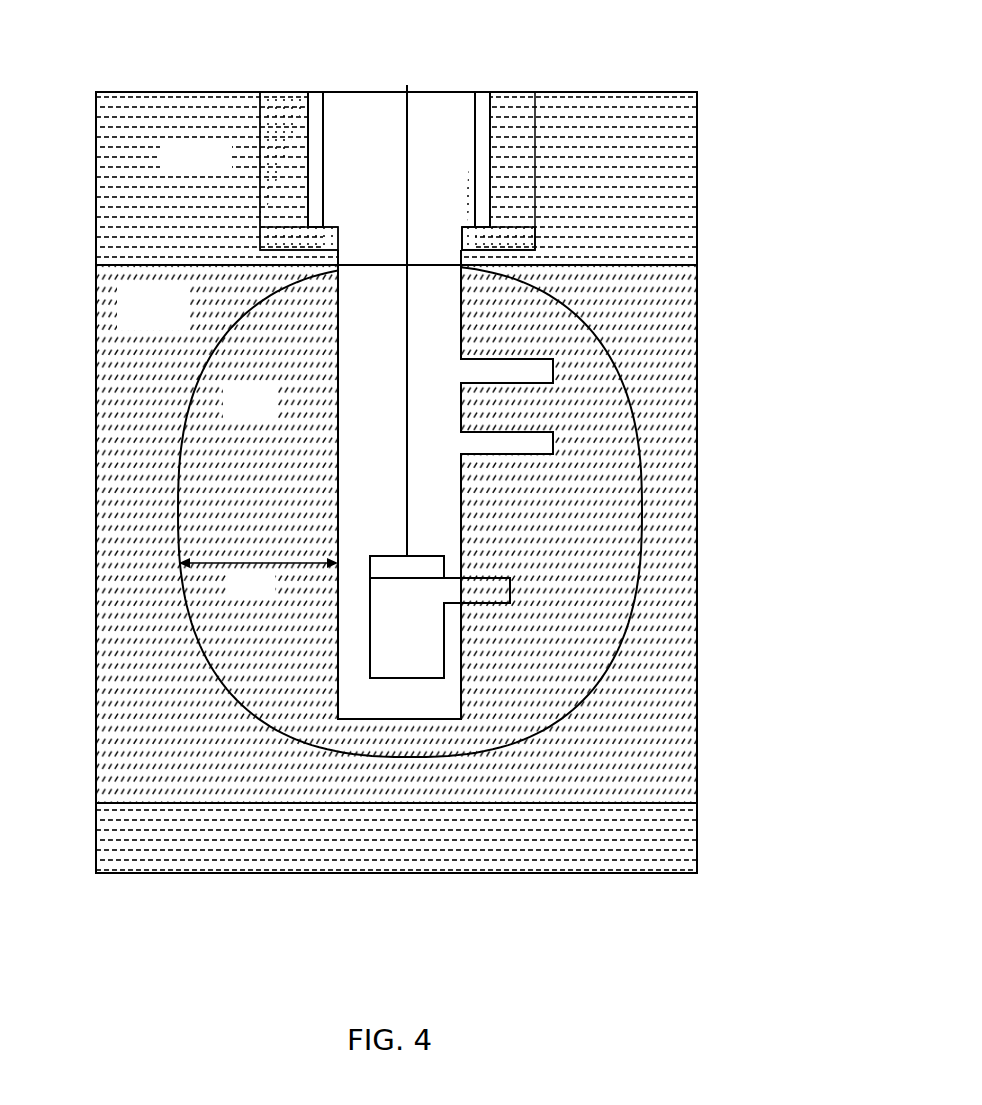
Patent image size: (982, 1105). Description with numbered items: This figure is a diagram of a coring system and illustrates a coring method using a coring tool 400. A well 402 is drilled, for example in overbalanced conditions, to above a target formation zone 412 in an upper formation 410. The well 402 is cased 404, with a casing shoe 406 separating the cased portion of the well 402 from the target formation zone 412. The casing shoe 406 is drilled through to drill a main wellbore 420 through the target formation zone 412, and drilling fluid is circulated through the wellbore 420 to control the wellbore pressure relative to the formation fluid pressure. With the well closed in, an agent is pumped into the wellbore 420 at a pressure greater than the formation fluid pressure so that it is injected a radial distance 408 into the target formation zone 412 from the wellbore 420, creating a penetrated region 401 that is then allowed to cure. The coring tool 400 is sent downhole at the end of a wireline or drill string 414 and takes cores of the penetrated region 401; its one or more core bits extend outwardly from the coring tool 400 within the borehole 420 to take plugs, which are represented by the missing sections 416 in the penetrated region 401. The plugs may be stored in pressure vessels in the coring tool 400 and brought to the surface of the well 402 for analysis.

The coring tool 400 is at (425, 656).
The penetrated region 401 is at (268, 416).
The well 402 is at (291, 71).
The casing 404 is at (483, 112).
The casing shoe 406 is at (470, 241).
The radial distance 408 is at (258, 577).
The upper formation 410 is at (215, 162).
The target formation zone 412 is at (168, 318).
The wireline or drill string 414 is at (408, 114).
The missing sections 416 is at (535, 366).
The main wellbore 420 is at (387, 474).